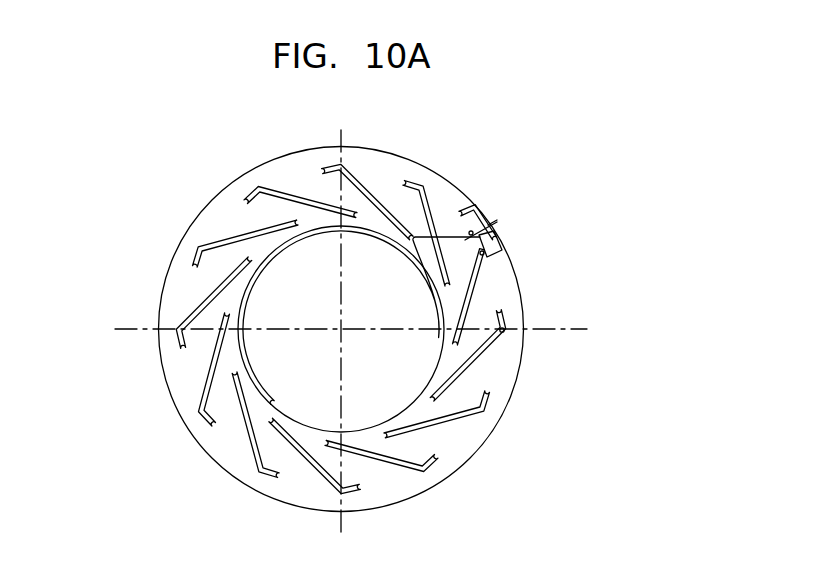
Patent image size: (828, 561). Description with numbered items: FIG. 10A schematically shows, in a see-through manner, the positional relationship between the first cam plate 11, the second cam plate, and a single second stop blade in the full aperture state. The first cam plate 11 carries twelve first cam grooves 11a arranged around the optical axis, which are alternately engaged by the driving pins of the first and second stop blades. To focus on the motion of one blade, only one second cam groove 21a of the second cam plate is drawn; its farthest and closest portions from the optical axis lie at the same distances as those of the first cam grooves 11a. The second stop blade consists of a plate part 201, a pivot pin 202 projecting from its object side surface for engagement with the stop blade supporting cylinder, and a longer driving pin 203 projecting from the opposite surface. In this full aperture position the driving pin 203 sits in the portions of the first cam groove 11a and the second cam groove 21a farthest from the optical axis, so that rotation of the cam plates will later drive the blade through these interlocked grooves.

The first cam plate 11 is at (183, 383).
The first cam groove 11a is at (426, 209).
The second cam groove 21a is at (472, 373).
The plate part 201 is at (507, 360).
The pivot pin 202 is at (487, 254).
The driving pin 203 is at (503, 330).